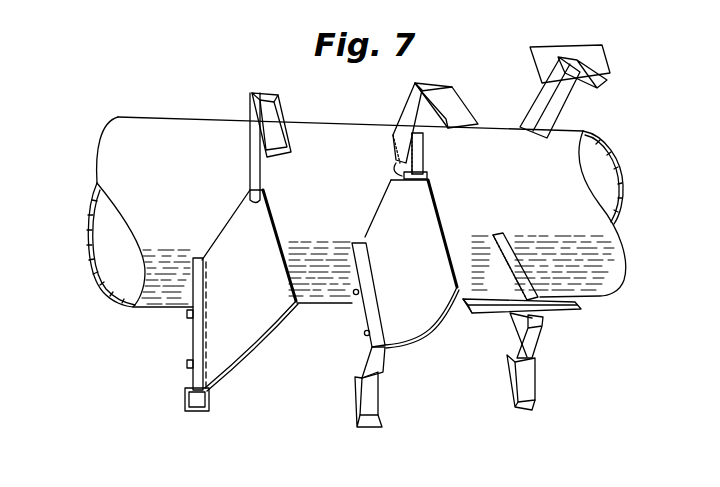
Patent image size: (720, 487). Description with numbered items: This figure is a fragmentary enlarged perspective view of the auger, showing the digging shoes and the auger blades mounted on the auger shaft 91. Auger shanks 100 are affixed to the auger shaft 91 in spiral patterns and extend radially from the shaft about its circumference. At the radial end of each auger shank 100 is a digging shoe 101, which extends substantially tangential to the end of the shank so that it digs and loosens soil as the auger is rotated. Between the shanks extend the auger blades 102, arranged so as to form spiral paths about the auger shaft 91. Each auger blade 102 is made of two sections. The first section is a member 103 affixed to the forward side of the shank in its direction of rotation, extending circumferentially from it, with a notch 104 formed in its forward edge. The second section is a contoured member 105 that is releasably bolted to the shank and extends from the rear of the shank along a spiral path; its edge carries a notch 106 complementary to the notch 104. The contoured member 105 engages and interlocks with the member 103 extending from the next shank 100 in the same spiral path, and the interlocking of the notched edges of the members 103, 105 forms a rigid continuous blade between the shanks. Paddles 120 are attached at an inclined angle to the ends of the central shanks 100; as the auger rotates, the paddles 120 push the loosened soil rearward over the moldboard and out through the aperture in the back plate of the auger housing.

The auger shaft 91 is at (338, 205).
The auger shank 100 is at (407, 112).
The digging shoe 101 is at (280, 103).
The auger blade 102 is at (228, 210).
The member 103 is at (262, 174).
The notch 104 is at (426, 172).
The contoured member 105 is at (256, 297).
The notch 106 is at (402, 176).
The paddle 120 is at (573, 312).